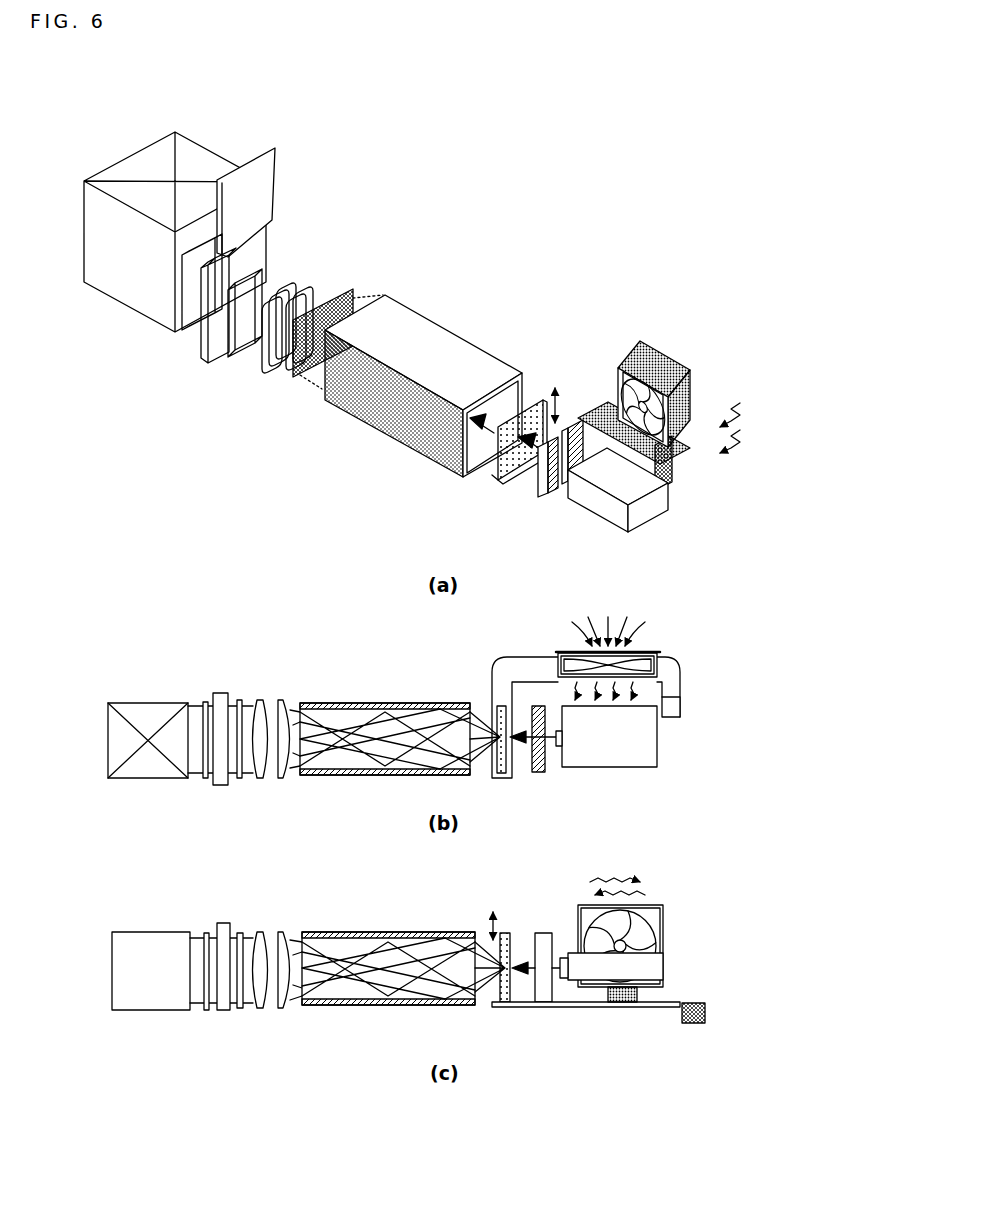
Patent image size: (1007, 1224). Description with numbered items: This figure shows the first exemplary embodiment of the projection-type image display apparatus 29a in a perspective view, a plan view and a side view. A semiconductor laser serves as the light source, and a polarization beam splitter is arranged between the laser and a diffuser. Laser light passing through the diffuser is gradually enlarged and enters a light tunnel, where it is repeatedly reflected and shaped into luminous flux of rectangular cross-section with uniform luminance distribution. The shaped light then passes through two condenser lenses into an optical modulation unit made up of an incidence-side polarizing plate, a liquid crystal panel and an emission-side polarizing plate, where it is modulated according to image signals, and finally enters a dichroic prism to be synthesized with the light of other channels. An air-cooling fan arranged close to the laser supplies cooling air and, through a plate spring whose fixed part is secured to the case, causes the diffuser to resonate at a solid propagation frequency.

The projection-type image display apparatus 29a is at (572, 226).